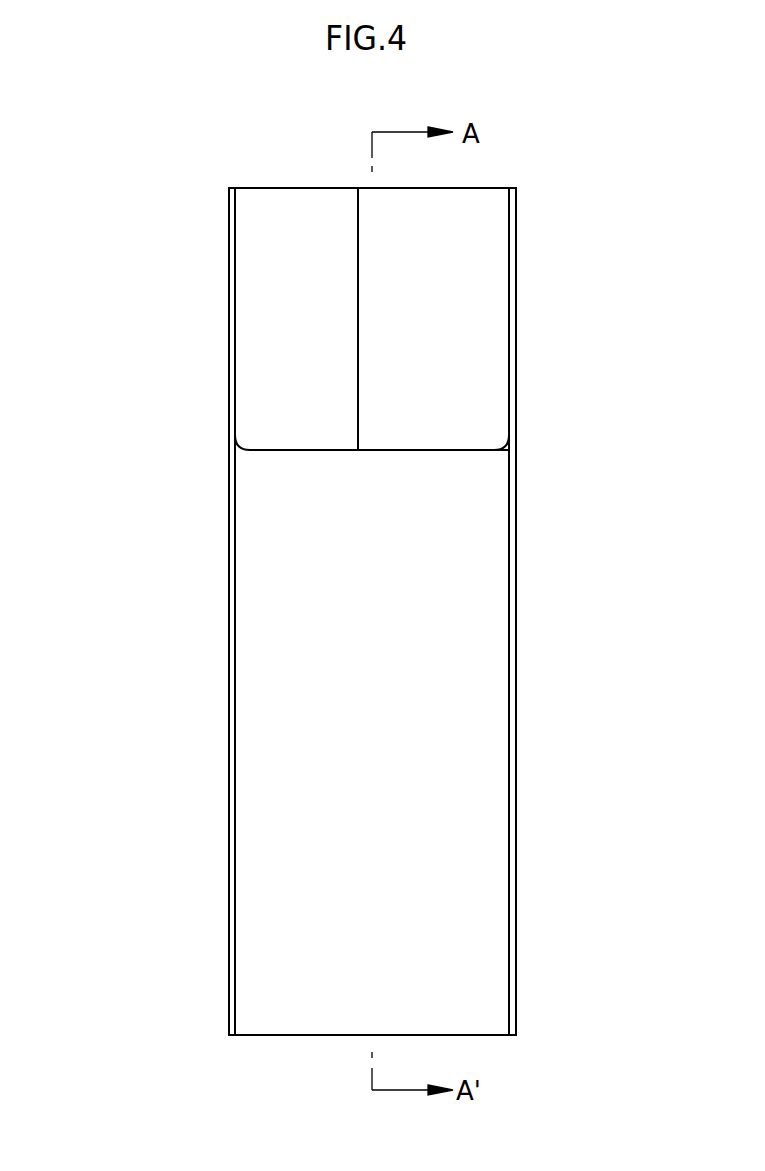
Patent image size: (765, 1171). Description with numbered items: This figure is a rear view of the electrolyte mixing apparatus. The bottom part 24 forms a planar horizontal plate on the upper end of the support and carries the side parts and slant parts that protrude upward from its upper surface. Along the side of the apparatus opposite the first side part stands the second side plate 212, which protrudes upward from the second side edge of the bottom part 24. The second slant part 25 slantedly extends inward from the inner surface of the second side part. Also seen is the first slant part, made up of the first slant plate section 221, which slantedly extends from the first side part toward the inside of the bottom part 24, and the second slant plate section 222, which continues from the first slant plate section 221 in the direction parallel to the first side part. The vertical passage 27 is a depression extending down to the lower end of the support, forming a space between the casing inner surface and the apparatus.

The second side plate 212 is at (229, 328).
The first slant plate section 221 is at (473, 334).
The second slant plate section 222 is at (358, 244).
The bottom part 24 is at (450, 450).
The vertical passage 27 is at (486, 805).
The second slant part 25 is at (516, 888).